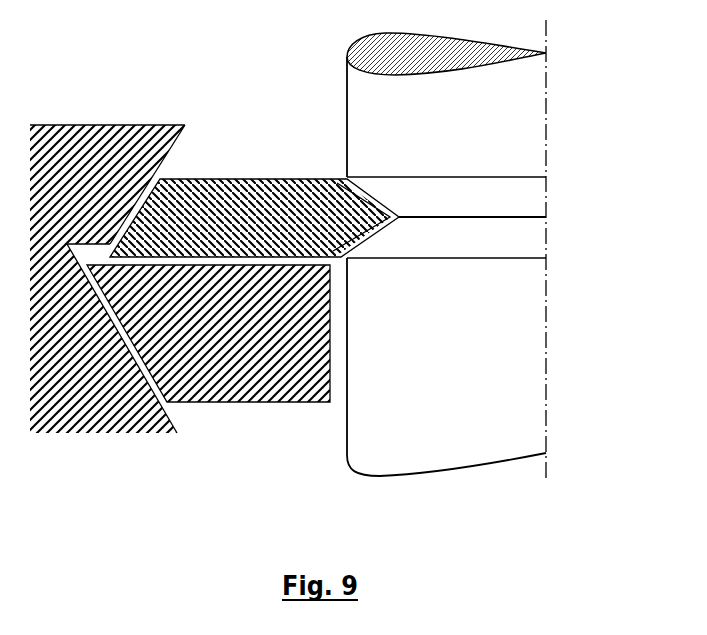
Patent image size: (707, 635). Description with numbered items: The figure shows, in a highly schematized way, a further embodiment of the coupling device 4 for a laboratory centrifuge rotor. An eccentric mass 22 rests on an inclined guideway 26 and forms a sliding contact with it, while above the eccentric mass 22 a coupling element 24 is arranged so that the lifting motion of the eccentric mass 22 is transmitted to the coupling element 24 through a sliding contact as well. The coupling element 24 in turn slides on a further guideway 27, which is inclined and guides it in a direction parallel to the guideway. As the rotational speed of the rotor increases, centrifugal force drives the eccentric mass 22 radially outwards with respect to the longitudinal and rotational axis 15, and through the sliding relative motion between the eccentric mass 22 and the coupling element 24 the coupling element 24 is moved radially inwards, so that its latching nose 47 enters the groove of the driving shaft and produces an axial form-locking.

The coupling device 4 is at (338, 167).
The longitudinal and rotational axis 15 is at (546, 112).
The eccentric mass 22 is at (253, 360).
The coupling element 24 is at (261, 188).
The guideway 26 is at (127, 352).
The further guideway 27 is at (137, 194).
The latching nose 47 is at (382, 228).